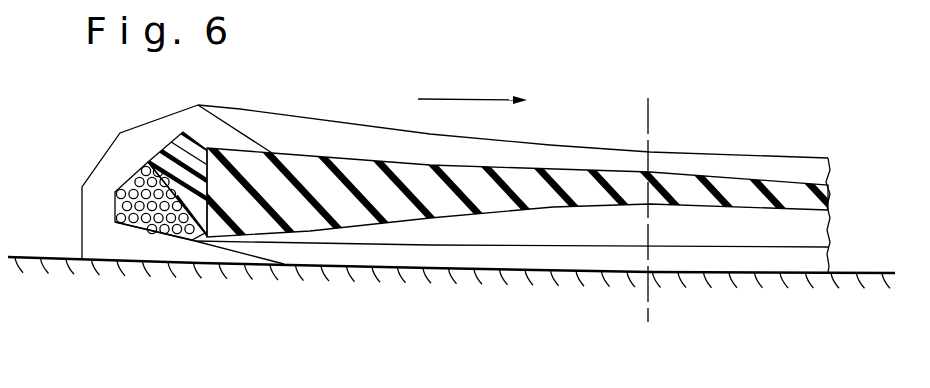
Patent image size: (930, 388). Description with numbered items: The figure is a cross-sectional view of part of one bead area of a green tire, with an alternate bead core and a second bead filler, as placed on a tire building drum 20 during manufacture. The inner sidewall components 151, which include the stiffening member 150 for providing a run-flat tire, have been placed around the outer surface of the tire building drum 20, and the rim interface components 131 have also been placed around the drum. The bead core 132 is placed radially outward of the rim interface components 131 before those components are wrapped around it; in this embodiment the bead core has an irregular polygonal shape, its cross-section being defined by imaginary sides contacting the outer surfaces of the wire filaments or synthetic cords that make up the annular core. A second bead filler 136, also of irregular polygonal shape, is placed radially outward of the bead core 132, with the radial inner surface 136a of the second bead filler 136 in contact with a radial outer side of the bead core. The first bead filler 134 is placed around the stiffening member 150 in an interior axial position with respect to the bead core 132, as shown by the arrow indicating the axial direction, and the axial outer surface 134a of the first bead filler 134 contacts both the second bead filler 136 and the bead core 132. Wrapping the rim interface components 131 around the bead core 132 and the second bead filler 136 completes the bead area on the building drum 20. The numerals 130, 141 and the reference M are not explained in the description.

The tire building drum 20 is at (872, 272).
The bead portion 130 is at (358, 101).
The rim interface components 131 is at (107, 238).
The bead core 132 is at (158, 233).
The first bead filler 134 is at (508, 176).
The axial outer surface of the first bead filler 134a is at (163, 168).
The second bead filler 136 is at (183, 158).
The radial inner surface of the second bead filler 136a is at (182, 236).
The outer rubber layer 141 is at (547, 139).
The stiffening member 150 is at (484, 252).
The inner sidewall components 151 is at (602, 280).
The reference line M is at (650, 295).